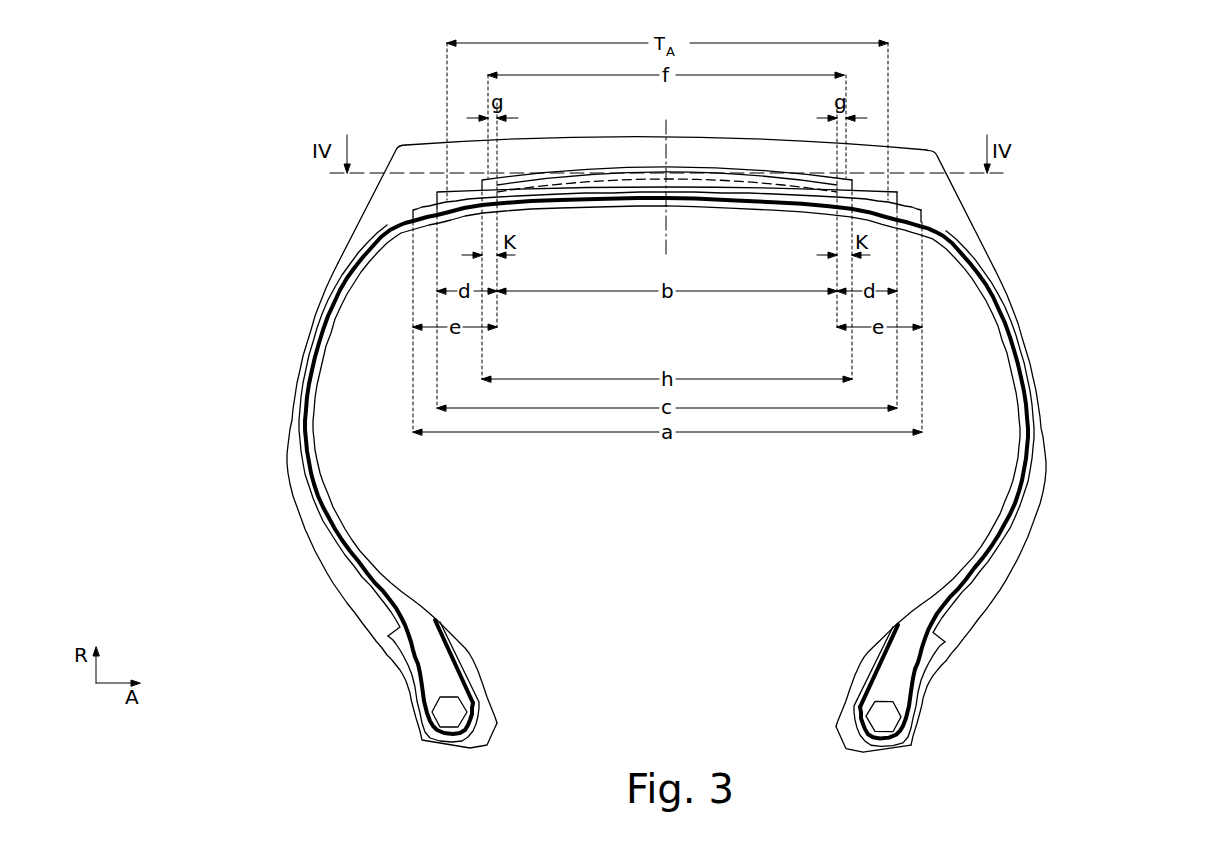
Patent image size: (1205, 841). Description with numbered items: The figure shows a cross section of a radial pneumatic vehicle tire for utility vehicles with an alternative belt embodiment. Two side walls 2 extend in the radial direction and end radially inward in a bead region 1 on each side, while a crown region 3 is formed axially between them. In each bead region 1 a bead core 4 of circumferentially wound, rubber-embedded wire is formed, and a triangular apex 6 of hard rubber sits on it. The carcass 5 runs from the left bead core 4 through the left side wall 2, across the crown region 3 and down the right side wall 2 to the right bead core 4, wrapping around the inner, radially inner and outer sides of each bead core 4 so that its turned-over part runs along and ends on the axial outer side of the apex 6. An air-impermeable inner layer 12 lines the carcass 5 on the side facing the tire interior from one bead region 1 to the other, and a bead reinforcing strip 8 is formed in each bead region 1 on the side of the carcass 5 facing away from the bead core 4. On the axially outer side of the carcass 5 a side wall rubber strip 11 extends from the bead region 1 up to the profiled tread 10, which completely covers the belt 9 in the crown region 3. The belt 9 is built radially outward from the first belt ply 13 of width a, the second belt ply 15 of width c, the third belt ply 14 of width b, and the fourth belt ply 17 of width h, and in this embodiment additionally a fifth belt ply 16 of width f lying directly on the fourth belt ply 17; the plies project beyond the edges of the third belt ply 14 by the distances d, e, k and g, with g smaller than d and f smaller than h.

The bead region 1 is at (925, 713).
The side wall 2 is at (1048, 428).
The crown region 3 is at (583, 130).
The bead core 4 is at (447, 715).
The carcass 5 is at (1033, 467).
The apex 6 is at (982, 563).
The bead reinforcing strip 8 is at (863, 668).
The belt 9 is at (553, 168).
The profiled tread 10 is at (678, 155).
The side wall rubber strip 11 is at (1045, 403).
The inner layer 12 is at (933, 587).
The first belt ply 13 is at (913, 206).
The third belt ply 14 is at (632, 172).
The second belt ply 15 is at (870, 193).
The fifth belt ply 16 is at (710, 165).
The fourth belt ply 17 is at (738, 173).